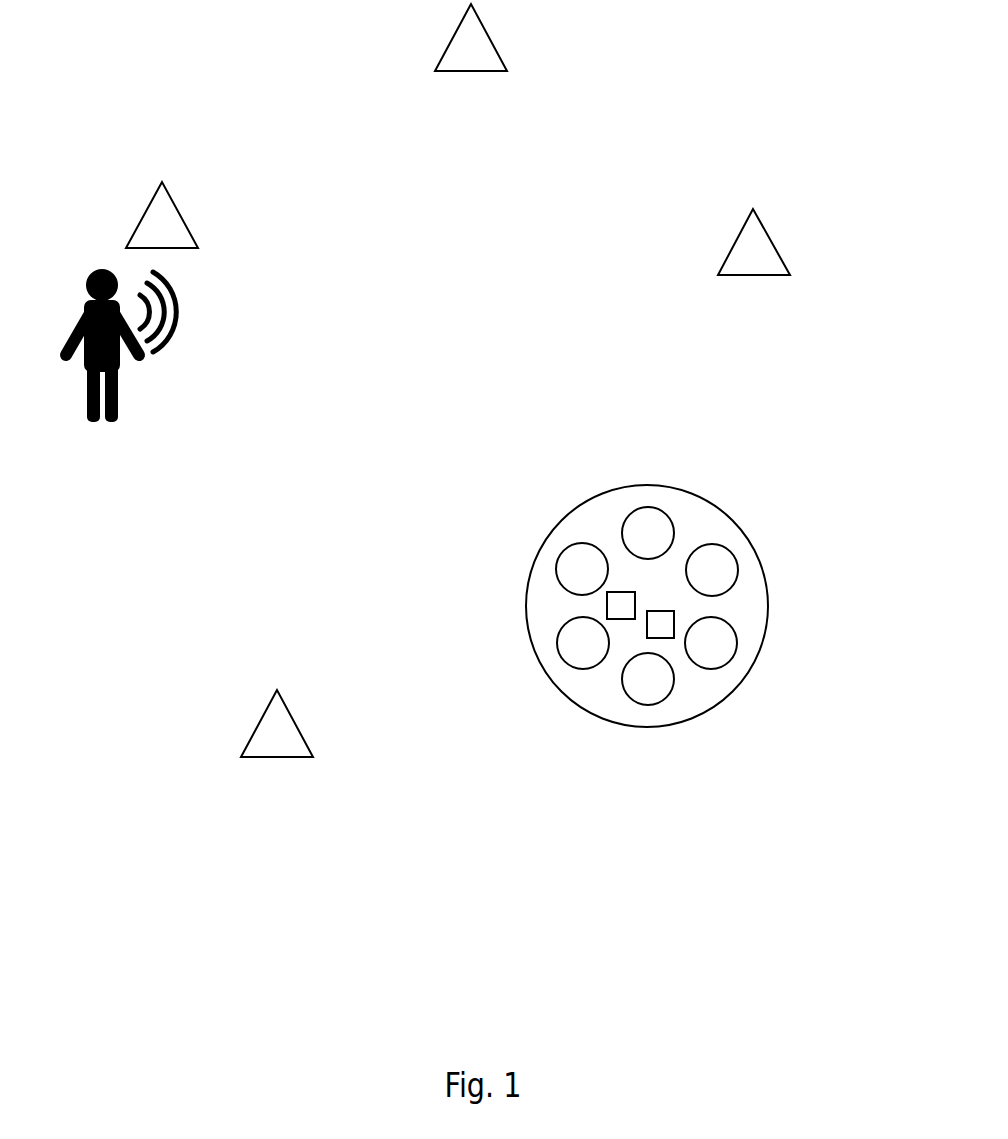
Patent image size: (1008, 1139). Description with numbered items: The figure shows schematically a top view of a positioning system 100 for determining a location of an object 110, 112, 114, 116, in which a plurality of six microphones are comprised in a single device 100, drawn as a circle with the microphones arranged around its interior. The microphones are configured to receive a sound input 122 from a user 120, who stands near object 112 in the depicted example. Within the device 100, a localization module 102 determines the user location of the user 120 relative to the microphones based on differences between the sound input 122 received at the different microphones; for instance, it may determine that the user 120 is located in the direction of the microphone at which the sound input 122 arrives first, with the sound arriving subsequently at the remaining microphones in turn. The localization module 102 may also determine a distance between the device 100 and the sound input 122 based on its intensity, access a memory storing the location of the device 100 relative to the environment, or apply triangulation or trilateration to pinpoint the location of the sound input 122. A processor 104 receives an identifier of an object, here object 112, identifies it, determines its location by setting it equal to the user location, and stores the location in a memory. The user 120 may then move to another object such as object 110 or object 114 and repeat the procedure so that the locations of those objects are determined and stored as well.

The positioning system / single device 100 is at (747, 626).
The localization module 102 is at (615, 606).
The processor 104 is at (662, 632).
The object 110 is at (255, 725).
The object 112 is at (174, 230).
The object 114 is at (472, 50).
The object 116 is at (757, 256).
The user 120 is at (120, 368).
The sound input 122 is at (162, 295).